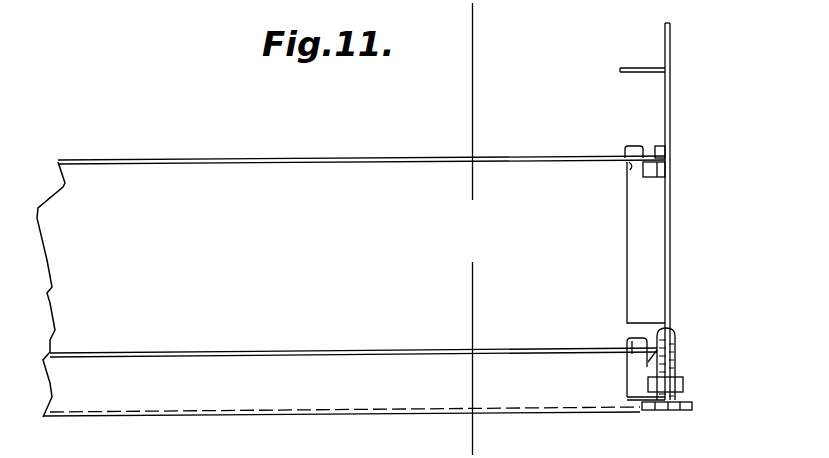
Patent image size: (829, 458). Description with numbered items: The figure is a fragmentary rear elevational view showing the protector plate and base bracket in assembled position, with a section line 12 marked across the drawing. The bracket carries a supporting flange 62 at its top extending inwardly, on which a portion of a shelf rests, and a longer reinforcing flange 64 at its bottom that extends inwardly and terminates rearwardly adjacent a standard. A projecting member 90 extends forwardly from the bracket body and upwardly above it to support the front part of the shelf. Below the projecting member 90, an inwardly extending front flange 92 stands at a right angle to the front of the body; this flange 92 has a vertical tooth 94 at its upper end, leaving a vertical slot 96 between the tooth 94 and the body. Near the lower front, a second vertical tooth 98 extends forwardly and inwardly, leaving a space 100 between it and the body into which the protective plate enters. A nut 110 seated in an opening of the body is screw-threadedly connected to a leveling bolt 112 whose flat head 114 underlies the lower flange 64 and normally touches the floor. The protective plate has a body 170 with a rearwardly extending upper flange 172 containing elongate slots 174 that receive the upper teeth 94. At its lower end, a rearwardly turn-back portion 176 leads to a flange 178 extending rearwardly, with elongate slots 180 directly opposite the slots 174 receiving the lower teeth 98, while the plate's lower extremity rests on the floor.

The section line 12 is at (448, 22).
The supporting flange 62 is at (640, 67).
The reinforcing flange 64 is at (638, 401).
The projecting member 90 is at (671, 48).
The front flange 92 is at (638, 246).
The vertical tooth 94 is at (625, 148).
The vertical slot 96 is at (650, 165).
The vertical tooth 98 is at (640, 357).
The space 100 is at (647, 363).
The nut 110 is at (682, 383).
The leveling bolt 112 is at (673, 340).
The flat head 114 is at (684, 412).
The body 170 is at (200, 289).
The upper flange 172 is at (383, 157).
The elongate slots 174 is at (630, 165).
The turn-back portion 176 is at (280, 390).
The flange 178 is at (337, 349).
The elongate slots 180 is at (633, 337).